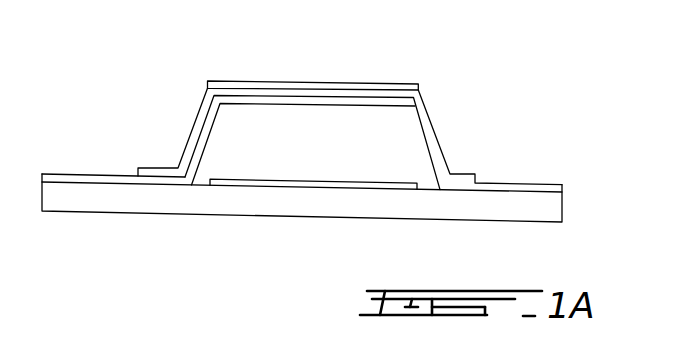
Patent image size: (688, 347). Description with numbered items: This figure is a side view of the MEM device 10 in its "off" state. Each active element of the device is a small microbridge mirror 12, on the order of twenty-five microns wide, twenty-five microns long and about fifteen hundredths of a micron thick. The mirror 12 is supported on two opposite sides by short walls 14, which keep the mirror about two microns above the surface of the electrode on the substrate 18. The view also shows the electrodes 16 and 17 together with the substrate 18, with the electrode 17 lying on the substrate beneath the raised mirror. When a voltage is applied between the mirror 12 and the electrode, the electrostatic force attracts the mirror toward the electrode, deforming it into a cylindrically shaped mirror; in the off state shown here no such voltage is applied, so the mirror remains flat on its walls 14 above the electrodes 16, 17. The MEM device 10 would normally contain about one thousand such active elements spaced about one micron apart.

The MEM device 10 is at (452, 107).
The mirror 12 is at (342, 88).
The short walls 14 is at (192, 128).
The electrode 16 is at (352, 106).
The electrode 17 is at (307, 184).
The substrate 18 is at (402, 205).